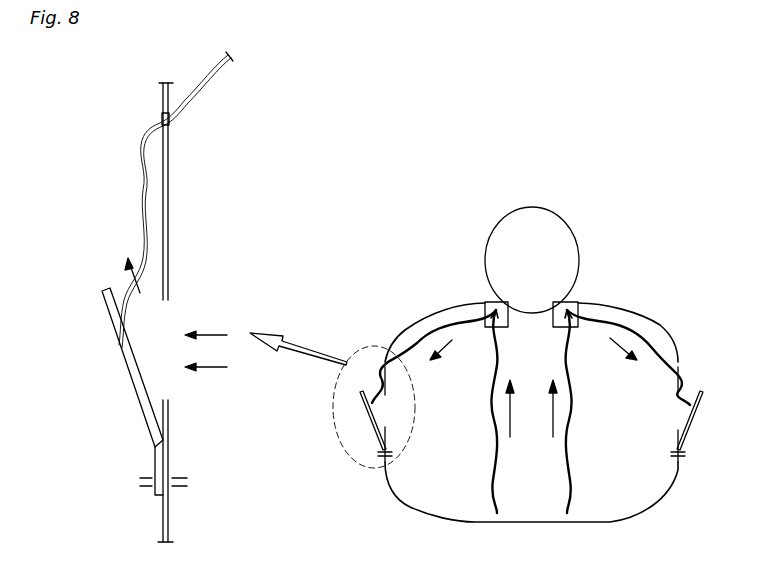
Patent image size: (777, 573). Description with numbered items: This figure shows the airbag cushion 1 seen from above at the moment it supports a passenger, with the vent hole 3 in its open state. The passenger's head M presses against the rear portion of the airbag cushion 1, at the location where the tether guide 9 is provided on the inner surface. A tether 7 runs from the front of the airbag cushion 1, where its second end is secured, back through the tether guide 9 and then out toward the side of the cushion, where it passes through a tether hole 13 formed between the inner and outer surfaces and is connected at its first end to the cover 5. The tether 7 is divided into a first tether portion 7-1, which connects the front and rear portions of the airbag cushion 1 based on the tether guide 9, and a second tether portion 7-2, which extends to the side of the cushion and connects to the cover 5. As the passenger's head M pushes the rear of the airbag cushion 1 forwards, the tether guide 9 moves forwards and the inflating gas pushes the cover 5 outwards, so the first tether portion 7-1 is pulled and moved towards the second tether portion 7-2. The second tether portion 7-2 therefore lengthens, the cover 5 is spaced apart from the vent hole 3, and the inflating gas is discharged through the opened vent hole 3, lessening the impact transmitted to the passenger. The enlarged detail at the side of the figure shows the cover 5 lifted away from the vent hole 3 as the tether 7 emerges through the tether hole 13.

The airbag cushion 1 is at (163, 222).
The vent hole 3 is at (165, 356).
The cover 5 is at (142, 395).
The tether 7 is at (205, 80).
The first tether portion 7-1 is at (570, 473).
The second tether portion 7-2 is at (440, 323).
The tether guide 9 is at (580, 302).
The tether hole 13 is at (168, 122).
The passenger's head M is at (560, 240).